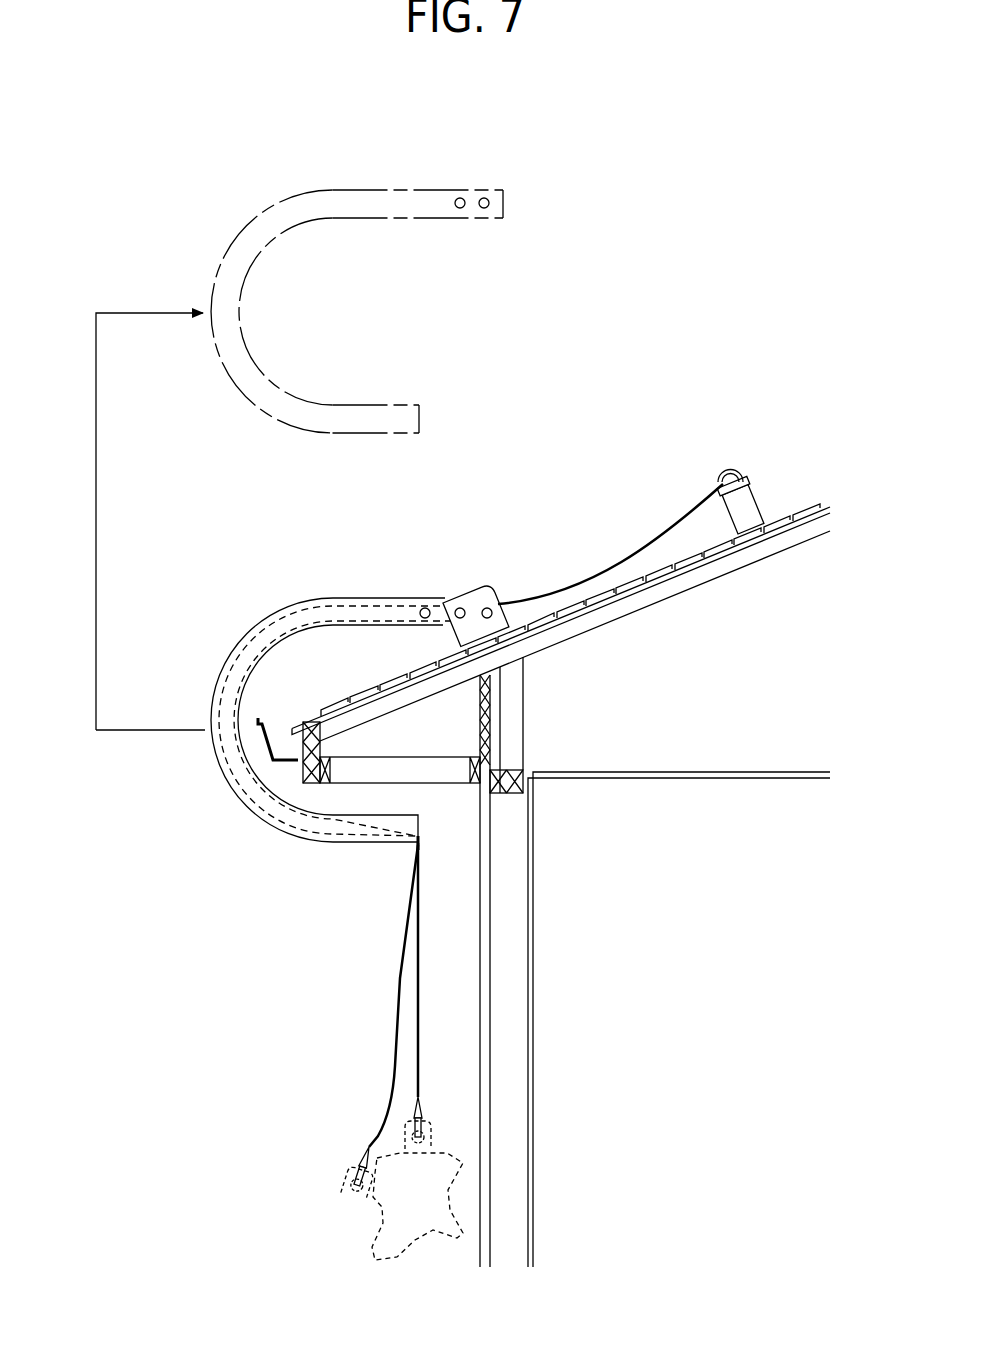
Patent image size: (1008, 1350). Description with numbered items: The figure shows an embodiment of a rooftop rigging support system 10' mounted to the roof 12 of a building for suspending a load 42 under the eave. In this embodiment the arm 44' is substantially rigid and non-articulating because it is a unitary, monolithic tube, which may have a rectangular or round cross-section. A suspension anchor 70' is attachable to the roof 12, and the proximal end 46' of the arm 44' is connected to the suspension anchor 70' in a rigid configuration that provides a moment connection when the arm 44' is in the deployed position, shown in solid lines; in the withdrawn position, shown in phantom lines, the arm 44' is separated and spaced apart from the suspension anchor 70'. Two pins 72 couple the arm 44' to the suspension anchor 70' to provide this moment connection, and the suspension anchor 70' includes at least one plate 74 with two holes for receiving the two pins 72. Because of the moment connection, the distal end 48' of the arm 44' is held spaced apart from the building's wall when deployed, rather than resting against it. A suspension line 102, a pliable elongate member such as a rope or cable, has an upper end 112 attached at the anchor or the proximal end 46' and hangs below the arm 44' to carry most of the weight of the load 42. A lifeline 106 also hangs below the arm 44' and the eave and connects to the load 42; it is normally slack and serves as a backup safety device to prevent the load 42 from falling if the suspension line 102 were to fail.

The rooftop rigging support system 10' is at (763, 213).
The roof 12 is at (788, 508).
The load 42 is at (372, 1248).
The arm 44' is at (299, 516).
The proximal end 46' is at (510, 422).
The distal end 48' is at (458, 645).
The suspension anchor 70' is at (359, 721).
The pins 72 is at (460, 606).
The plate 74 is at (487, 583).
The suspension line 102 is at (357, 824).
The lifeline 106 is at (677, 518).
The upper end 112 is at (390, 617).